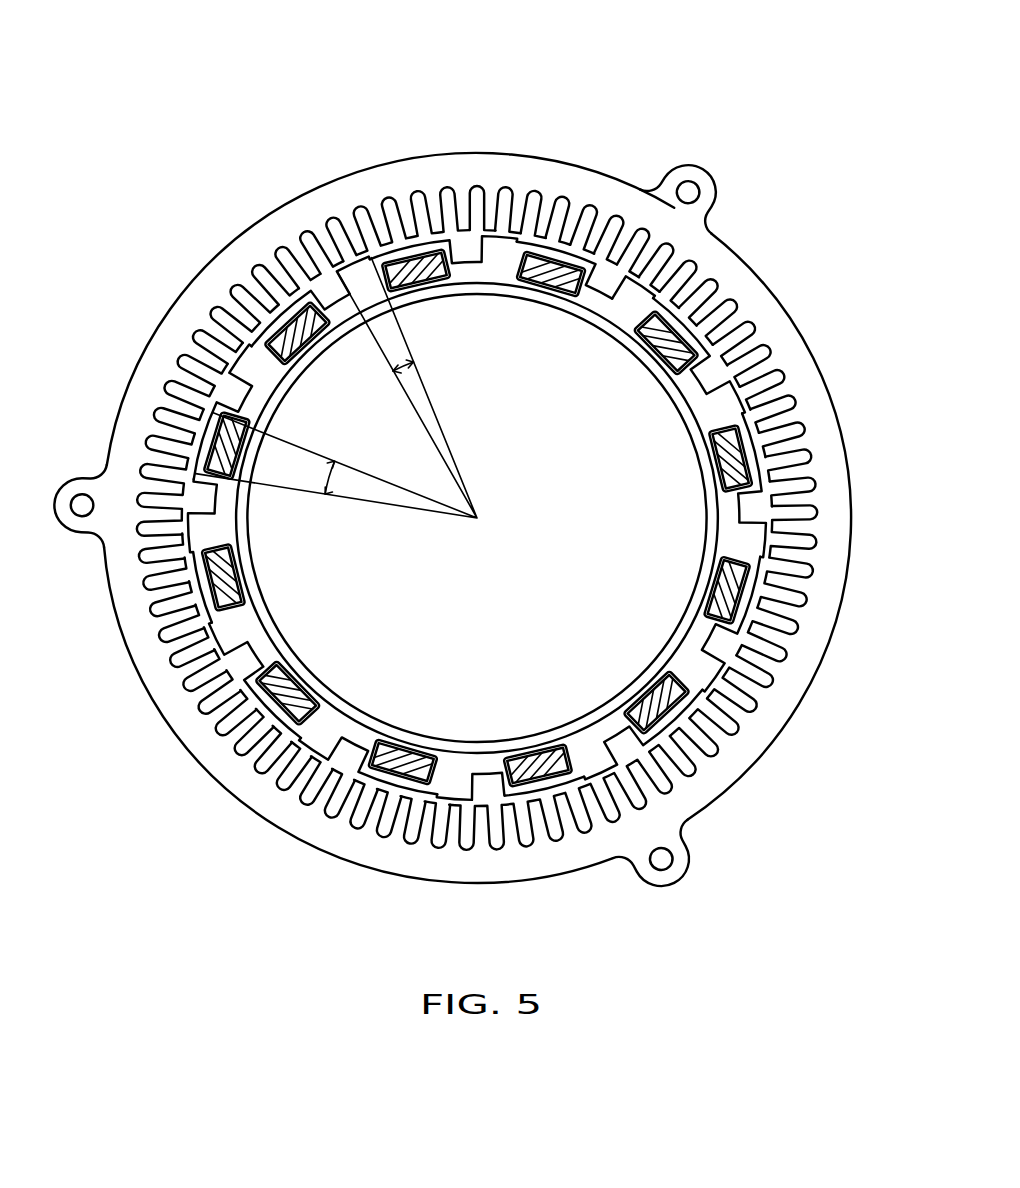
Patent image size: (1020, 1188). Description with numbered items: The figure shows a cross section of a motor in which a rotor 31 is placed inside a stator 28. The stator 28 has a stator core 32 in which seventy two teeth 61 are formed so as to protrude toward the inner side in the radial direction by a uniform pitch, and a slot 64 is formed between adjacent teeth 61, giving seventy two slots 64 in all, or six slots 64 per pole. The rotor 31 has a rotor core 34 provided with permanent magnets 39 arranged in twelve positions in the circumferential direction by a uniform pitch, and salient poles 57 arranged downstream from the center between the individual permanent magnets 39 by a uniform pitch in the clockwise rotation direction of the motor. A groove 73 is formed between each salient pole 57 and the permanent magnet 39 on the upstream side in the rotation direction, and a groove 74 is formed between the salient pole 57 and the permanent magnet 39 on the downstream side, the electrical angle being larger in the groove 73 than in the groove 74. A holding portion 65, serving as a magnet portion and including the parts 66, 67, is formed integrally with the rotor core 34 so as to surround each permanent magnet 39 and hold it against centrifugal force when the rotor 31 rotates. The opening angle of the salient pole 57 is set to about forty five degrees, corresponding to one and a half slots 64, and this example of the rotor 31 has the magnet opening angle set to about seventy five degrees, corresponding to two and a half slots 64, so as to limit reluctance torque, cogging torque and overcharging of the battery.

The stator 28 is at (460, 464).
The stator core 32 is at (609, 176).
The teeth 61 is at (501, 512).
The slot 64 is at (706, 283).
The holding portion 65 is at (782, 311).
The tooth tip face 66 is at (702, 330).
The tooth tip edge 67 is at (708, 337).
The groove 73 is at (600, 277).
The groove 74 is at (630, 295).
The salient pole 57 is at (640, 271).
The permanent magnet 39 is at (675, 340).
The rotor core 34 is at (478, 518).
The rotor 31 is at (478, 518).